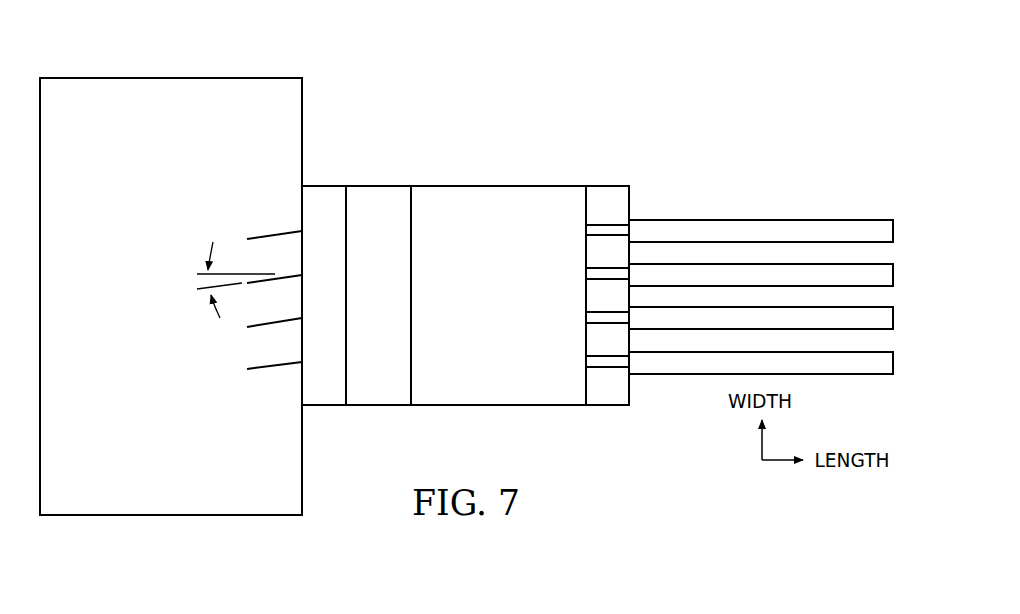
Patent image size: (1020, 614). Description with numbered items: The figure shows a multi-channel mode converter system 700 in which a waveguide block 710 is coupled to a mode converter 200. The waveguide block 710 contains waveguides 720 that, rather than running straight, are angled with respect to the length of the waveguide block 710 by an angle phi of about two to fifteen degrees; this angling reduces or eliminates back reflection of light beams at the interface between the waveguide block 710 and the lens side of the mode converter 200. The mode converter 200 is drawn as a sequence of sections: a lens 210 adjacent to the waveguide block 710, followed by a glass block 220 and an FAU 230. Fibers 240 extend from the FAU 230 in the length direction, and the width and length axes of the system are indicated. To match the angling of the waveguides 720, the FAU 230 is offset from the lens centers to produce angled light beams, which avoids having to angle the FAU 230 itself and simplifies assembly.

The multi-channel mode converter system 700 is at (741, 66).
The waveguide block 710 is at (167, 85).
The waveguides 720 is at (273, 220).
The single-channel mode converter 200 is at (597, 250).
The lens 210 is at (322, 195).
The glass block 220 is at (385, 195).
The FAU 230 is at (500, 195).
The fiber 240 is at (762, 207).